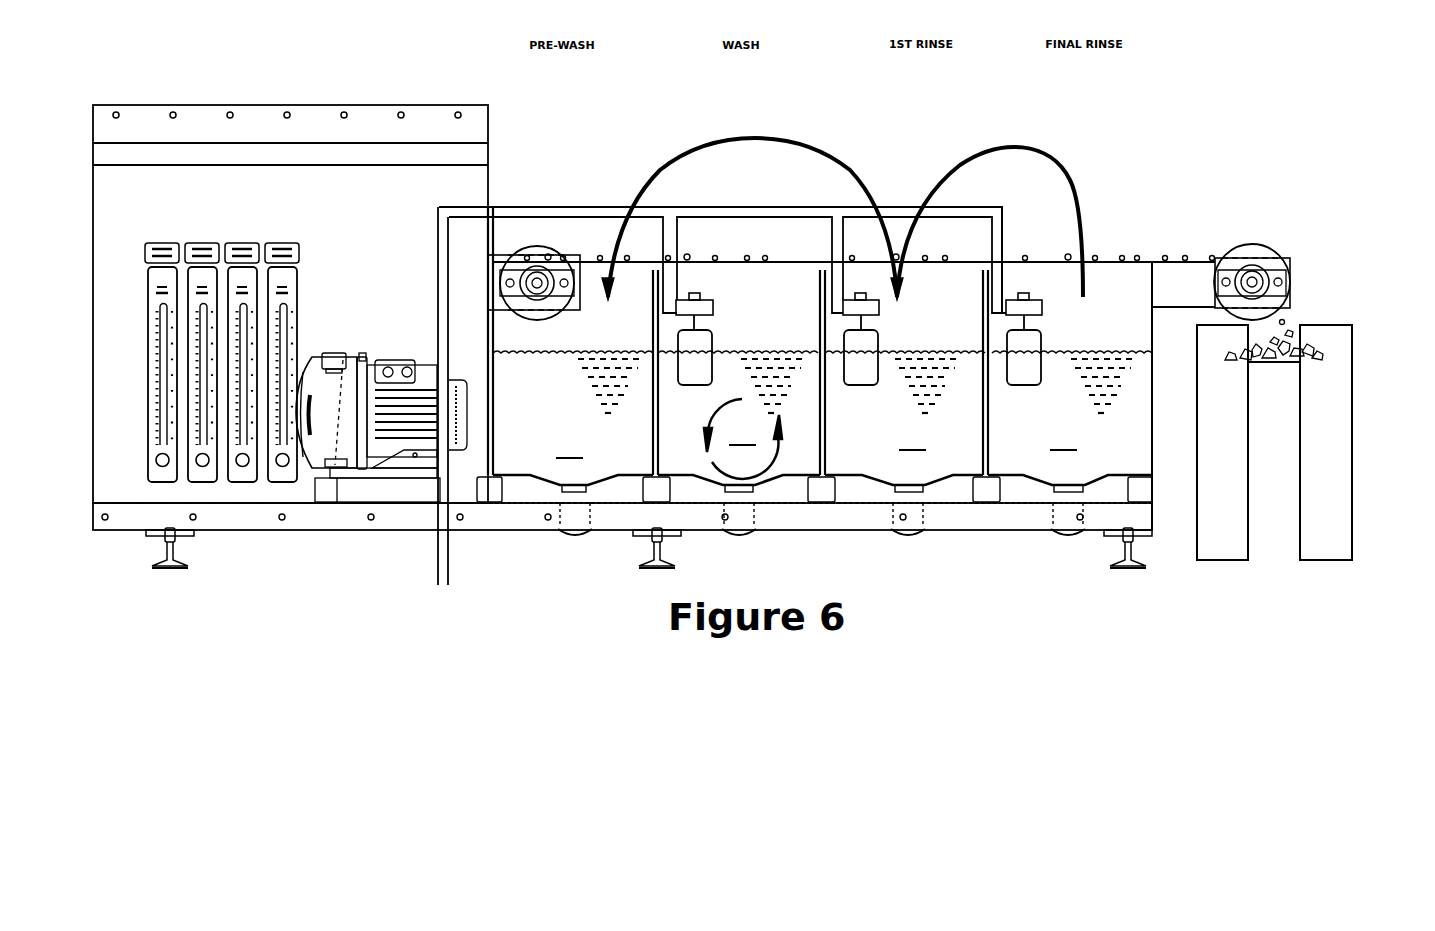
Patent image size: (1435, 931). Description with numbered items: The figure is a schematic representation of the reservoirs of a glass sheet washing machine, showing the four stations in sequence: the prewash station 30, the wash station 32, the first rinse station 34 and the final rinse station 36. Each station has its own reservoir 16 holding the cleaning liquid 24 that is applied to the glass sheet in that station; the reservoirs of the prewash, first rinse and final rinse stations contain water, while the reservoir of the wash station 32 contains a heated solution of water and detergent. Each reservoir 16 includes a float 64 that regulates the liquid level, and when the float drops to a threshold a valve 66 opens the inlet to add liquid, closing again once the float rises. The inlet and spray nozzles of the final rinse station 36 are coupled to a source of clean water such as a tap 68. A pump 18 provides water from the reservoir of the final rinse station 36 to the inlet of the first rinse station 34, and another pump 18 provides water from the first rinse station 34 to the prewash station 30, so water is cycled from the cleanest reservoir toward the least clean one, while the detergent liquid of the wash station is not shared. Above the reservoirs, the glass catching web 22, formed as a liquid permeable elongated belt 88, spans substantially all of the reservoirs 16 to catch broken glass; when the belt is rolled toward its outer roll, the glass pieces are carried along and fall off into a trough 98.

The reservoir 16 is at (814, 354).
The pump 18 is at (328, 463).
The glass catching web 22 is at (1177, 258).
The cleaning liquid 24 is at (848, 450).
The prewash station 30 is at (568, 152).
The wash station 32 is at (738, 110).
The first rinse station 34 is at (912, 123).
The final rinse station 36 is at (1087, 122).
The float 64 is at (700, 365).
The valve 66 is at (712, 310).
The tap 68 is at (443, 598).
The elongated belt 88 is at (1200, 260).
The trough 98 is at (1322, 355).